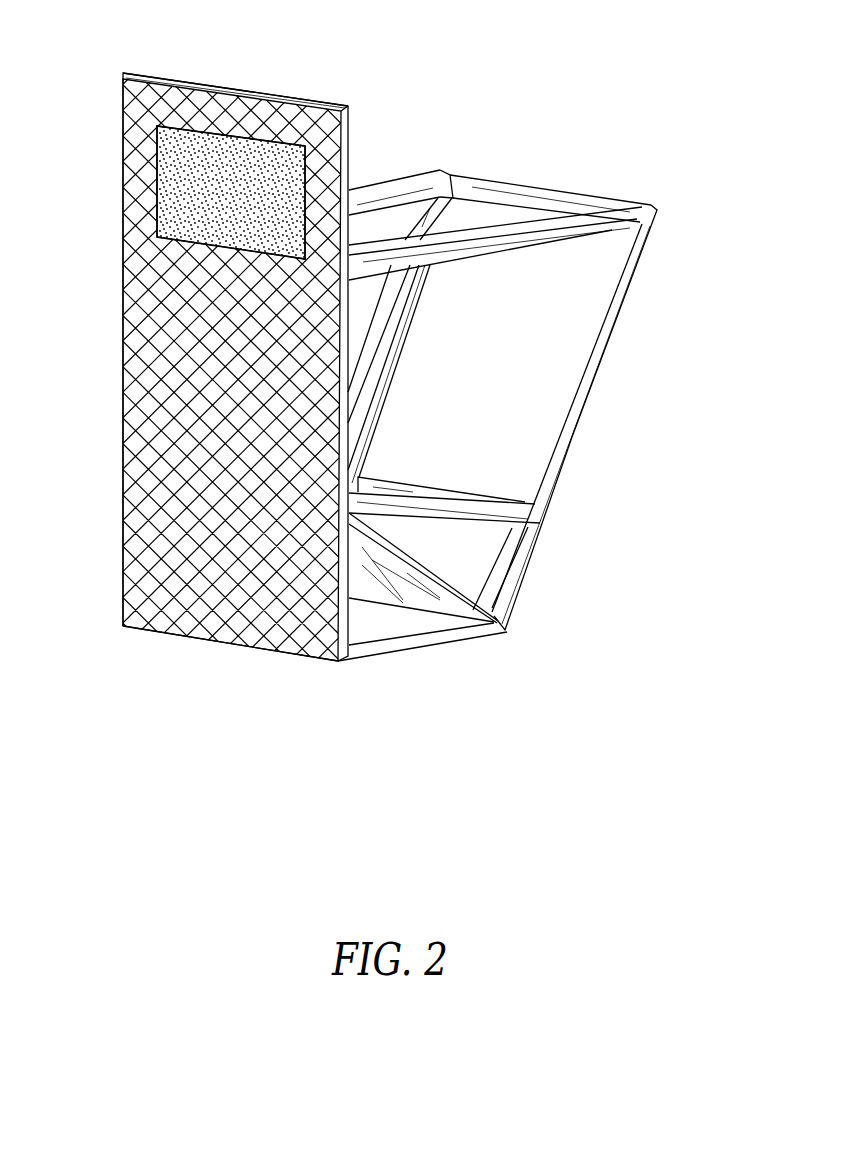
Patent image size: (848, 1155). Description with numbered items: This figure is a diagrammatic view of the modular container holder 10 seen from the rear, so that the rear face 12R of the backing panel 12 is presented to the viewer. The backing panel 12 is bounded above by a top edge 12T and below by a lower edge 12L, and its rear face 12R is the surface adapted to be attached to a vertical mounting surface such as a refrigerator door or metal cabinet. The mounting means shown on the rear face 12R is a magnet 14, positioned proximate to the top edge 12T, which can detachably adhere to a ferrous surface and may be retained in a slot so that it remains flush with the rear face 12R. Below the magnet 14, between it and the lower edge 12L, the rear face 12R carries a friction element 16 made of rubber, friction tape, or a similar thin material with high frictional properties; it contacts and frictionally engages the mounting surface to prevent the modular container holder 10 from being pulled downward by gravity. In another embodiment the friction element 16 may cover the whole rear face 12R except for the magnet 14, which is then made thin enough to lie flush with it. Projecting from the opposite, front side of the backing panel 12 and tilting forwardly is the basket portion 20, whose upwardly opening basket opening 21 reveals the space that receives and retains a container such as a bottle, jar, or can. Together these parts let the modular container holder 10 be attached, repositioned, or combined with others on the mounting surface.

The modular container holder 10 is at (447, 689).
The backing panel 12 is at (349, 108).
The top edge 12T is at (202, 82).
The rear face 12R is at (137, 150).
The lower edge 12L is at (282, 652).
The magnet 14 is at (157, 215).
The friction element 16 is at (225, 429).
The basket portion 20 is at (658, 211).
The basket opening 21 is at (588, 208).